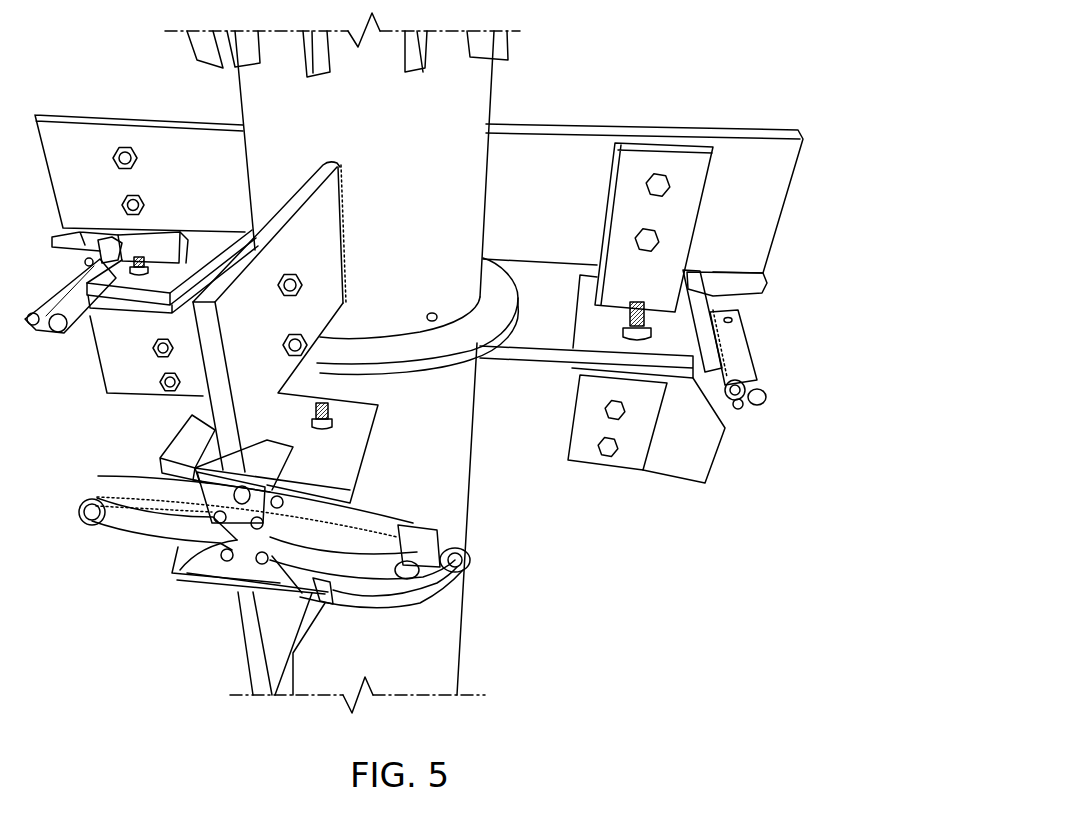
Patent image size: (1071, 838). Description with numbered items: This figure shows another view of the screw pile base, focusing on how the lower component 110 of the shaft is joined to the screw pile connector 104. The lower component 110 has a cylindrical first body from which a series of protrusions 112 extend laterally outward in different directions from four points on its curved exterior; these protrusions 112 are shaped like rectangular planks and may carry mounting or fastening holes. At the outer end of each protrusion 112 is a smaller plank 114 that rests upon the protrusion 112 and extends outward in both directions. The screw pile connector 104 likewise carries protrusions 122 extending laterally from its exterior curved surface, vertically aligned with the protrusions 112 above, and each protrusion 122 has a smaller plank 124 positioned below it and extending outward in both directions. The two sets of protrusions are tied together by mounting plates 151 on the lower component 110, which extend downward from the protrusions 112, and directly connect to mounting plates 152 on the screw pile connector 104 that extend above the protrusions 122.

The screw pile connector 104 is at (453, 335).
The lower component 110 is at (448, 121).
The protrusions 112 is at (742, 207).
The smaller plank 114 is at (762, 287).
The protrusions 122 is at (181, 584).
The smaller plank 124 is at (222, 636).
The mounting plates 151 is at (673, 165).
The mounting plates 152 is at (635, 437).